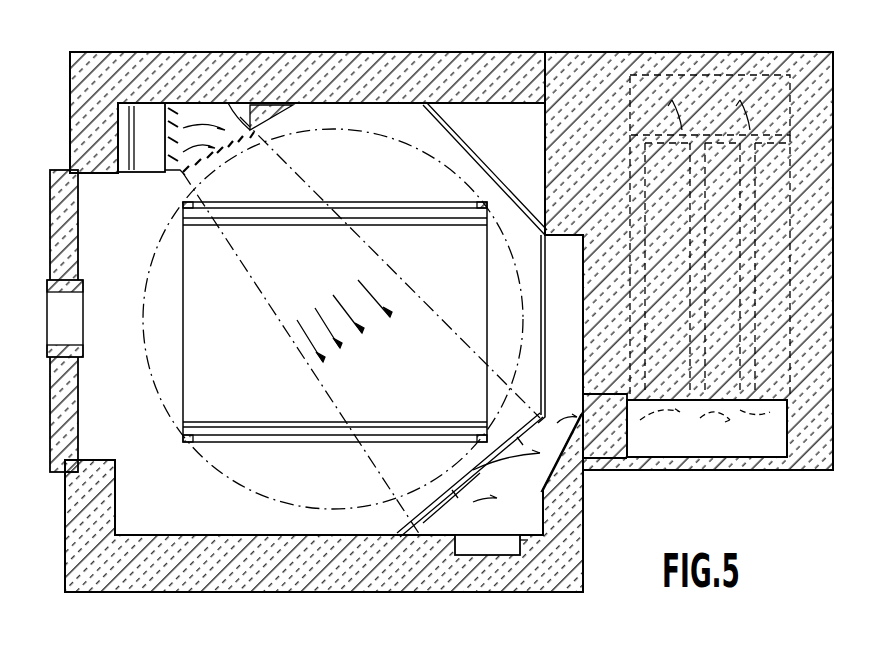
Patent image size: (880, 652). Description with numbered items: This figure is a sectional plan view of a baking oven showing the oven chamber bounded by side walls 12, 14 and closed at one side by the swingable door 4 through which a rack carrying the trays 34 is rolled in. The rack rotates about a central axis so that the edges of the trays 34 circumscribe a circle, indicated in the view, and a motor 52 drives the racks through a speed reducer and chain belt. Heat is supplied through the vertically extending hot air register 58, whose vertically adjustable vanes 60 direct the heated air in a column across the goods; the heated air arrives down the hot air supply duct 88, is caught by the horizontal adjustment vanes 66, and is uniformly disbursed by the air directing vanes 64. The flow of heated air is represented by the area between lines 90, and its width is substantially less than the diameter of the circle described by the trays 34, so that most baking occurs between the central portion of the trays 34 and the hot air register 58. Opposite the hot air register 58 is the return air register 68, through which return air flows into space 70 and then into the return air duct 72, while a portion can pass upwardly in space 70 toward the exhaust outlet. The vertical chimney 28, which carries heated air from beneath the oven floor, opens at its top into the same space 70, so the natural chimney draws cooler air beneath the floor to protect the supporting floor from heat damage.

The swingable door 4 is at (52, 417).
The side wall 12 is at (396, 560).
The side wall 14 is at (405, 70).
The vertical chimney 28 is at (487, 555).
The trays 34 is at (192, 378).
The motor 52 is at (206, 123).
The hot air register 58 is at (243, 107).
The vertically adjustable vanes 60 is at (247, 148).
The air directing vanes 64 is at (178, 110).
The horizontal adjustment vanes 66 is at (148, 138).
The return air register 68 is at (485, 470).
The space 70 is at (481, 486).
The return air duct 72 is at (559, 329).
The hot air supply duct 88 is at (125, 135).
The lines 90 is at (325, 372).